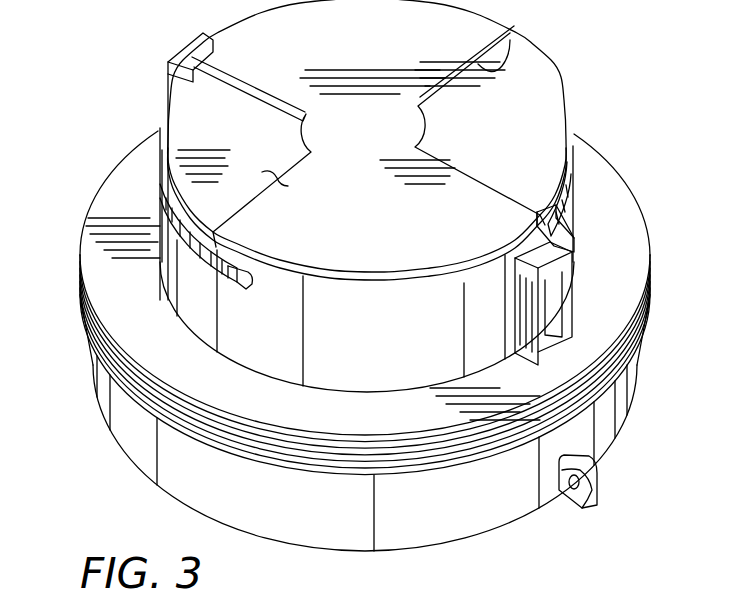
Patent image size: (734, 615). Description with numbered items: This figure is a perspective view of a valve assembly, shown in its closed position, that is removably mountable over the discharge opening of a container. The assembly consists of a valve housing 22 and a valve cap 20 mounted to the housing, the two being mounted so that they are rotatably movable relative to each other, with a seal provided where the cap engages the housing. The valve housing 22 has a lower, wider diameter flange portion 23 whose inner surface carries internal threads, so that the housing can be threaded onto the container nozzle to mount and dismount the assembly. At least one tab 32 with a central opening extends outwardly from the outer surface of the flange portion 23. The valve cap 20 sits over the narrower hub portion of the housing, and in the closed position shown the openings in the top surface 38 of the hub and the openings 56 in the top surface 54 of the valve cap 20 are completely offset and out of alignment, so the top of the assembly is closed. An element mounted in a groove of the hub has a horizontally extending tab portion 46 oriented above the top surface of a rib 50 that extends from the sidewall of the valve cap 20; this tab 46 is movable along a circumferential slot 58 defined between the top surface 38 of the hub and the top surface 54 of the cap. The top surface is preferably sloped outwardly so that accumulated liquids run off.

The valve cap 20 is at (206, 277).
The valve housing 22 is at (637, 398).
The lower, wider diameter flange portion 23 is at (212, 392).
The tab 32 is at (600, 481).
The top surface of the hub 38 is at (230, 146).
The horizontally extending tab portion 46 is at (186, 58).
The rib 50 is at (172, 88).
The top surface of the valve cap 54 is at (399, 54).
The openings on the top surface of the valve cap 56 is at (480, 68).
The circumferential slot 58 is at (228, 284).